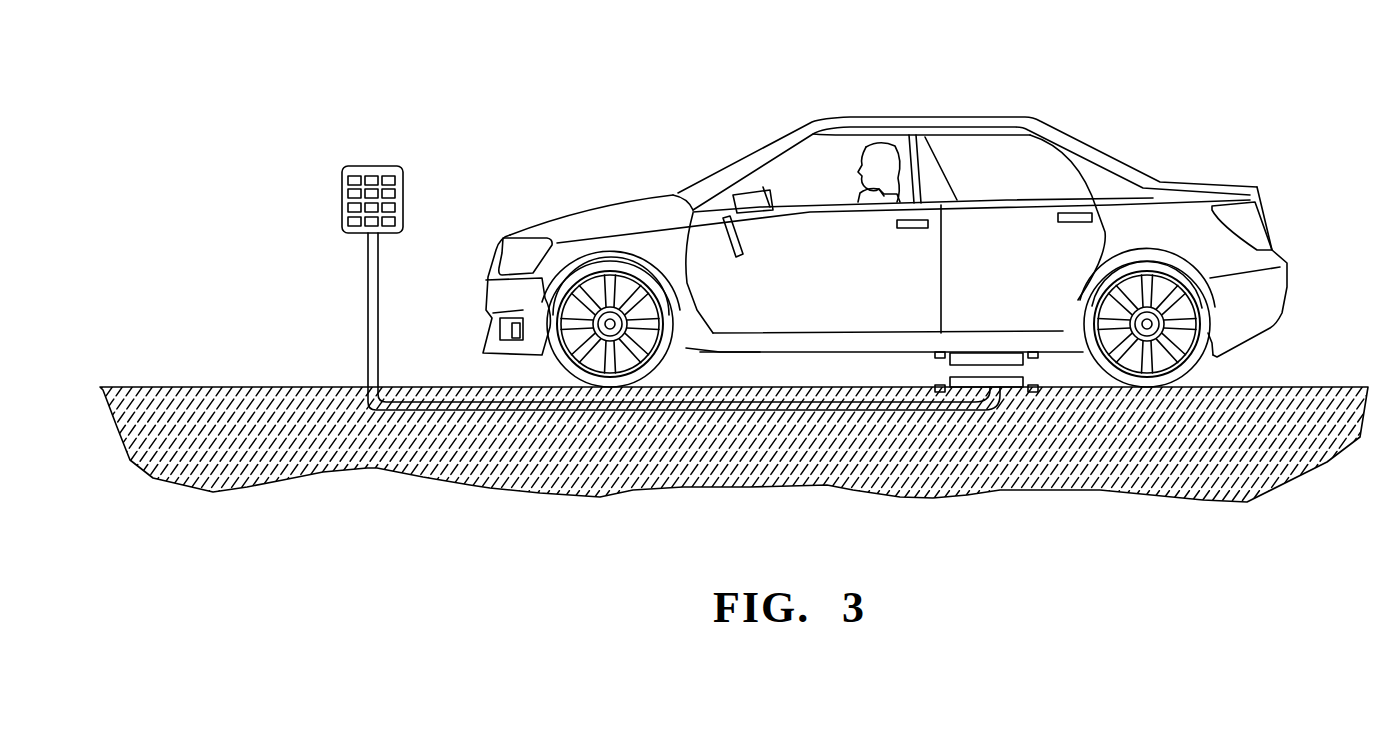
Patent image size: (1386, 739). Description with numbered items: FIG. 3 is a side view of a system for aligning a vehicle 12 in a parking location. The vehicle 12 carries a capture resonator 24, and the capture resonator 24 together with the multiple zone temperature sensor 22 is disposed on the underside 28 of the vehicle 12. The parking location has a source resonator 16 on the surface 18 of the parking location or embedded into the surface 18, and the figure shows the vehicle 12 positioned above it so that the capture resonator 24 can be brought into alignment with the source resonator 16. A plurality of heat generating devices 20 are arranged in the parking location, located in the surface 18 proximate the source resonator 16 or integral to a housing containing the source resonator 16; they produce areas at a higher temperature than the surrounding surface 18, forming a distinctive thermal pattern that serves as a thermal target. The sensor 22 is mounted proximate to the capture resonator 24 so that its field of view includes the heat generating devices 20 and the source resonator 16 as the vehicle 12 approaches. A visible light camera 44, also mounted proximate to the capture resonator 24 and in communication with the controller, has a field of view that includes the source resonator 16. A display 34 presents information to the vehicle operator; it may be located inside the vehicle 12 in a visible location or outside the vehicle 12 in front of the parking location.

The vehicle 12 is at (1063, 131).
The source resonator 16 is at (1000, 388).
The surface 18 is at (1333, 387).
The heat generating devices 20 is at (939, 392).
The multiple zone temperature sensor 22 is at (933, 358).
The capture resonator 24 is at (983, 353).
The underside 28 is at (722, 352).
The display 34 is at (402, 187).
The visible light camera 44 is at (1038, 358).